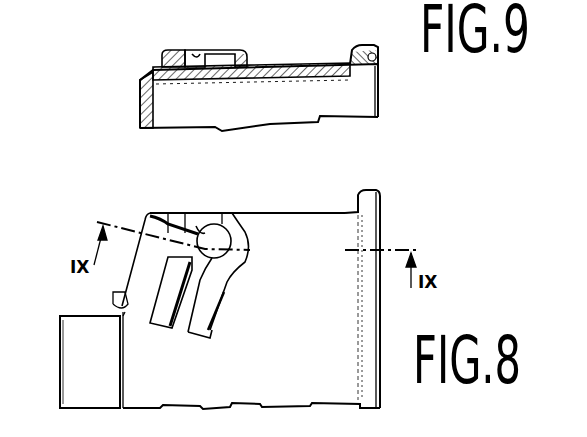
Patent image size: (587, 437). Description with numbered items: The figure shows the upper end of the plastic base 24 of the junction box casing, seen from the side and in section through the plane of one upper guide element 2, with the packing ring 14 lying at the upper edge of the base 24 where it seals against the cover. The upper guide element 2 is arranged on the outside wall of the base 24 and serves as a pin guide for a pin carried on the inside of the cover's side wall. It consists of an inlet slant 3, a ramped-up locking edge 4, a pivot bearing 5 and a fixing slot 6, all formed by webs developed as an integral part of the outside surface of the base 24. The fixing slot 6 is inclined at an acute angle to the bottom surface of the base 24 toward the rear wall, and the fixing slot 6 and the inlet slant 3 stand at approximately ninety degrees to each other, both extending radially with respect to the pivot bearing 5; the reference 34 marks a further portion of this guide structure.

In FIG. 8, the upper guide element 2 is at (184, 225).
In FIG. 9, the inlet slant 3 is at (166, 53).
In FIG. 8, the inlet slant 3 is at (160, 227).
In FIG. 9, the locking edge 4 is at (196, 57).
In FIG. 8, the locking edge 4 is at (212, 226).
In FIG. 9, the pivot bearing 5 is at (217, 57).
In FIG. 8, the pivot bearing 5 is at (218, 230).
In FIG. 8, the fixing slot 6 is at (200, 316).
In FIG. 9, the packing ring 14 is at (379, 54).
In FIG. 8, the packing ring 14 is at (380, 235).
In FIG. 9, the base 24 is at (289, 78).
In FIG. 8, the base 24 is at (301, 232).
In FIG. 8, the hub 34 is at (213, 213).